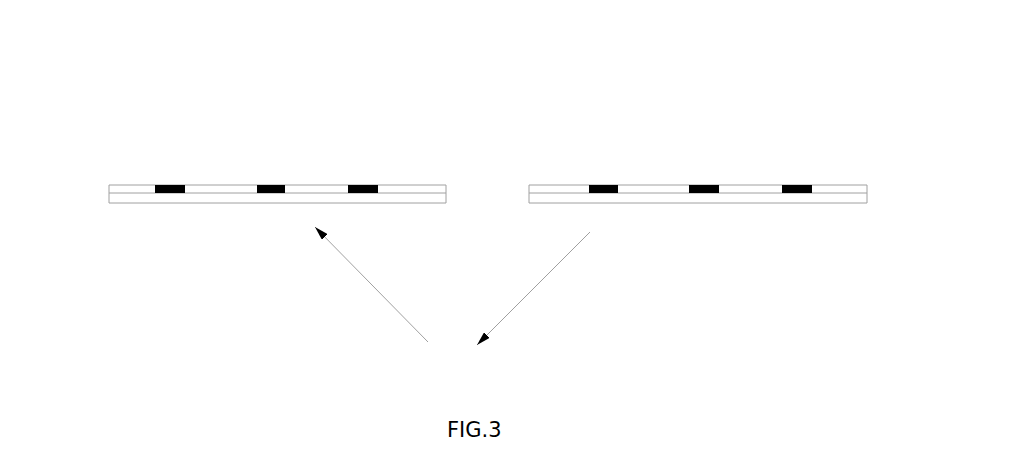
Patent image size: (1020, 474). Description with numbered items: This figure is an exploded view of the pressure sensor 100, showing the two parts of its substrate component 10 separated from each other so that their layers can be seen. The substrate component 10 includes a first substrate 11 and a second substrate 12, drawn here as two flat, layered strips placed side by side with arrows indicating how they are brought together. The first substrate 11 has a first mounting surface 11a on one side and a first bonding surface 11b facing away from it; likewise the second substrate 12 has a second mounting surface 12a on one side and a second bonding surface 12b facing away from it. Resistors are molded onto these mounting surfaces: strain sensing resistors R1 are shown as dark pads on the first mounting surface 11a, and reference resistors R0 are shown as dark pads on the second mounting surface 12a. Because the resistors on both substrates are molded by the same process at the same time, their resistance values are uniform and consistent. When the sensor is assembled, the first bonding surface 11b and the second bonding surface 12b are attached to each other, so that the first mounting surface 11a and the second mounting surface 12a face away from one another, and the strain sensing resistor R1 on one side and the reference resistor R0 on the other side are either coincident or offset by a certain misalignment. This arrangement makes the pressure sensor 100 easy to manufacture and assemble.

The pressure sensor 100 is at (486, 45).
The substrate component 10 is at (826, 174).
The first substrate 11 is at (132, 199).
The first mounting surface 11a is at (127, 192).
The first bonding surface 11b is at (128, 204).
The strain sensing resistor R1 is at (270, 185).
The second substrate 12 is at (843, 198).
The second mounting surface 12a is at (759, 192).
The second bonding surface 12b is at (765, 204).
The reference resistor R0 is at (603, 185).